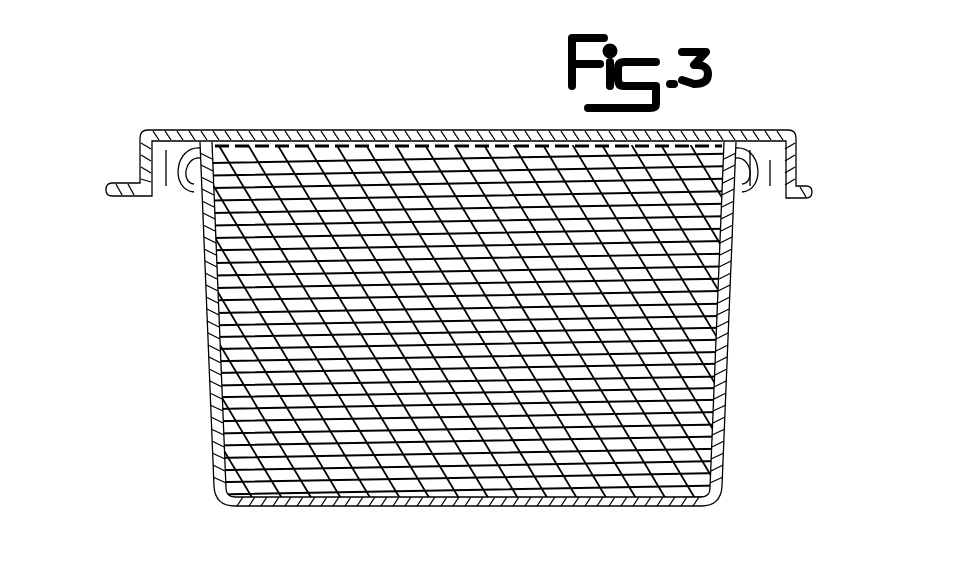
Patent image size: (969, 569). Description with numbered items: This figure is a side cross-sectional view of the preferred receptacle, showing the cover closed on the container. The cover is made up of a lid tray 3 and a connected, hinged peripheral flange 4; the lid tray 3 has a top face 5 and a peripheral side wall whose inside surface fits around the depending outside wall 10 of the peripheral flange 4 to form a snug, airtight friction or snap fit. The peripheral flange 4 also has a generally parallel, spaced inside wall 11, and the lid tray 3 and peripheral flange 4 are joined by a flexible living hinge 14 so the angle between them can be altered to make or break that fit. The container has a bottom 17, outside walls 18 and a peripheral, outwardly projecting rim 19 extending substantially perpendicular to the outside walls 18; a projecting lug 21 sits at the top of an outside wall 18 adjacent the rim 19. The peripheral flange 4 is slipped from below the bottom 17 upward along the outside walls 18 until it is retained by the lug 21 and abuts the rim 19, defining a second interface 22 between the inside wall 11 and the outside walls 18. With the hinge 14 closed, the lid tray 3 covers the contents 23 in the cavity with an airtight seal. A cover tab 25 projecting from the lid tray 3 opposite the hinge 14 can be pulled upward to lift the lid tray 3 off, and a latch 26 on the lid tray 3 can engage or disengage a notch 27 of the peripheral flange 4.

The lid tray 3 is at (762, 134).
The peripheral flange 4 is at (166, 156).
The top face 5 is at (440, 130).
The outside wall 10 is at (792, 152).
The inside wall 11 is at (247, 146).
The hinge 14 is at (112, 189).
The bottom 17 is at (522, 509).
The outside walls 18 is at (208, 364).
The rim 19 is at (178, 158).
The projecting lug 21 is at (197, 196).
The second interface 22 is at (200, 142).
The contents 23 is at (347, 166).
The cover tab 25 is at (812, 191).
The latch 26 is at (768, 182).
The notch 27 is at (770, 183).